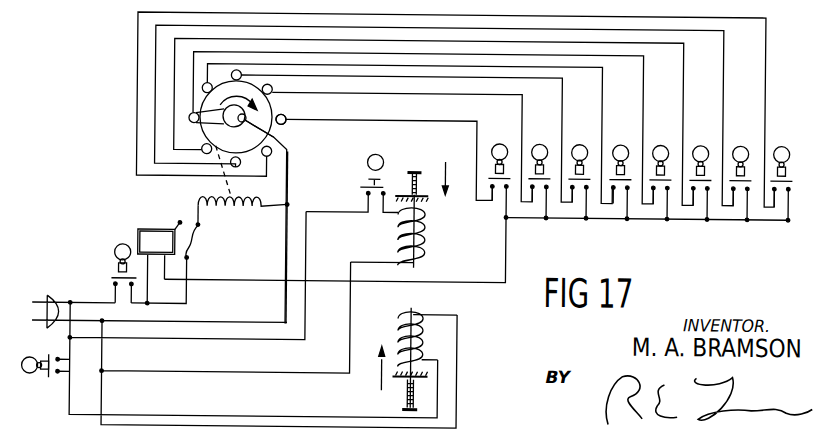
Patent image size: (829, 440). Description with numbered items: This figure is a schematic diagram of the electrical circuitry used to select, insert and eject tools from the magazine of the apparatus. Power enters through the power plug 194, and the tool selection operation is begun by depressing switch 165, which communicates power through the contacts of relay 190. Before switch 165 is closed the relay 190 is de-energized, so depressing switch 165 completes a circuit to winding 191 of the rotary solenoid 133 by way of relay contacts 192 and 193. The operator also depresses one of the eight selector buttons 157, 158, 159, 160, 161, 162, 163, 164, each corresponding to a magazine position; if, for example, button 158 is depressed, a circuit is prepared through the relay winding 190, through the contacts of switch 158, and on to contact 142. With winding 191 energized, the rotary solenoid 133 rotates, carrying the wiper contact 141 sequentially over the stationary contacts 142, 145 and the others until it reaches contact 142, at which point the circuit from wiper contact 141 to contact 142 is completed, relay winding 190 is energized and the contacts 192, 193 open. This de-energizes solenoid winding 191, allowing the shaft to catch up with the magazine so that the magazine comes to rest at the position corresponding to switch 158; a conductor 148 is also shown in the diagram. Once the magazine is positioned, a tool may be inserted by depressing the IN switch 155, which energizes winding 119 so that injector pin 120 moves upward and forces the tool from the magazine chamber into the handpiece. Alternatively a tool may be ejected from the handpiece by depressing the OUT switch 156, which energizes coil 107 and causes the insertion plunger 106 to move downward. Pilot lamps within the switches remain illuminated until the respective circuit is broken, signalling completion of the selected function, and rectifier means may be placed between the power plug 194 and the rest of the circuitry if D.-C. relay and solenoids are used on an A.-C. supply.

The wiper contact 141 is at (206, 104).
The contact 142 is at (192, 124).
The contact 145 is at (286, 114).
The rotary solenoid 133 is at (278, 136).
The relay 190 is at (158, 229).
The solenoid winding 191 is at (200, 226).
The relay contact 192 is at (191, 259).
The relay contact 193 is at (194, 240).
The conductor 148 is at (289, 228).
The switch 165 is at (118, 251).
The power plug 194 is at (51, 298).
The OUT switch 156 is at (364, 181).
The coil 107 is at (427, 238).
The insertion plunger 106 is at (418, 265).
The winding 119 is at (405, 321).
The injector pin 120 is at (415, 310).
The IN switch 155 is at (52, 380).
The selector button 157 is at (493, 139).
The selector button 158 is at (533, 139).
The selector button 159 is at (573, 139).
The selector button 160 is at (614, 139).
The selector button 161 is at (654, 139).
The selector button 162 is at (694, 139).
The selector button 163 is at (734, 139).
The selector button 164 is at (775, 139).